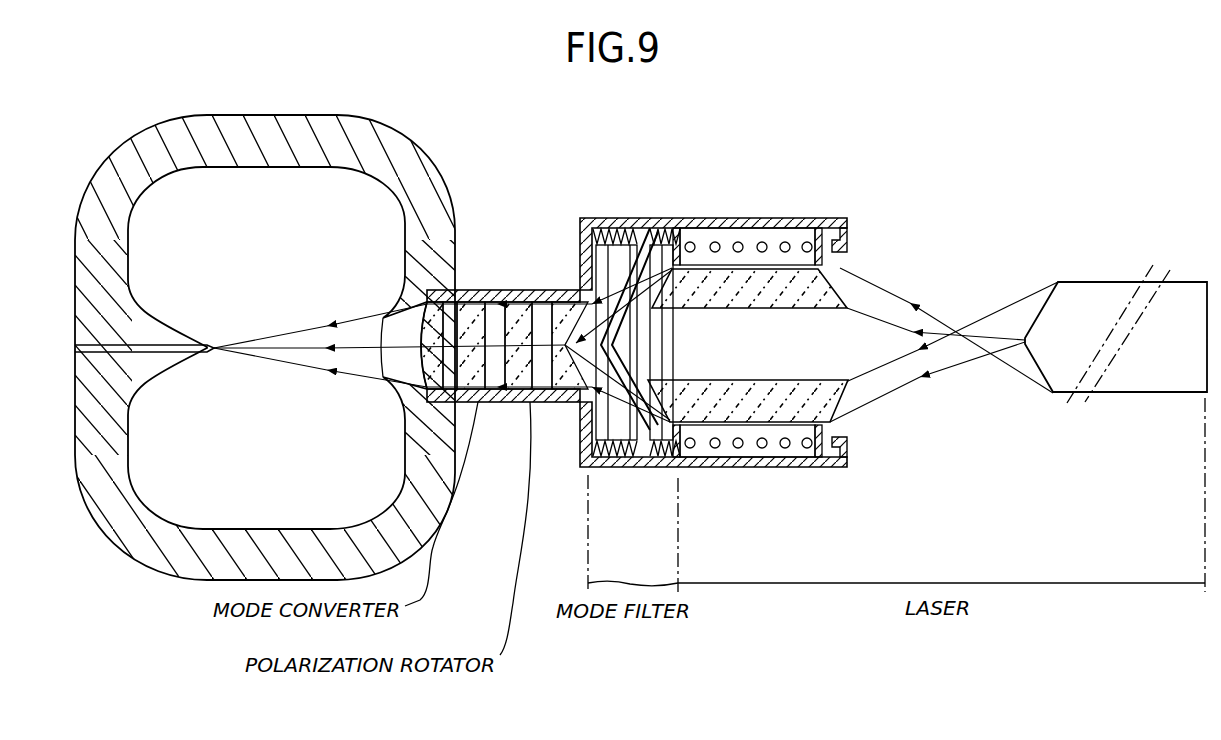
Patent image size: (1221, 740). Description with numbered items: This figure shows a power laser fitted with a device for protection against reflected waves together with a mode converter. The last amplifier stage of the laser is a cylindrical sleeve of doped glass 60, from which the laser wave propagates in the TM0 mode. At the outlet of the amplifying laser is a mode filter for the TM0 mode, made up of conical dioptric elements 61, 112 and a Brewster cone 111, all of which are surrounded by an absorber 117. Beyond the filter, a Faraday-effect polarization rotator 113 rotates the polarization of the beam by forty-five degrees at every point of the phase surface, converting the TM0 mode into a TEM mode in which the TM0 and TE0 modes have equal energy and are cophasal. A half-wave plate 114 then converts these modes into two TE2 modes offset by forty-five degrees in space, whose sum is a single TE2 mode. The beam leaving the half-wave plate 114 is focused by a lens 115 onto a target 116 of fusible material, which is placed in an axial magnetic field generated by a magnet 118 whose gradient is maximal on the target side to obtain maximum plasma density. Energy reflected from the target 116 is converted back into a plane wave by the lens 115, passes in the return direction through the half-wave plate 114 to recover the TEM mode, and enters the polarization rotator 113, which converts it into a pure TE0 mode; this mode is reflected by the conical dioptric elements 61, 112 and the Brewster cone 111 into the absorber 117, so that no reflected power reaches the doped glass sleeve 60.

The magnet 118 is at (262, 116).
The target 116 is at (212, 342).
The lens 115 is at (413, 333).
The half-wave plate 114 is at (464, 306).
The Faraday-effect polarization rotator 113 is at (517, 306).
The conical dioptric element 112 is at (560, 300).
The absorber 117 is at (655, 226).
The Brewster cone 111 is at (612, 346).
The conical dioptric element 61 is at (666, 292).
The cylindrical sleeve of doped glass 60 is at (815, 296).